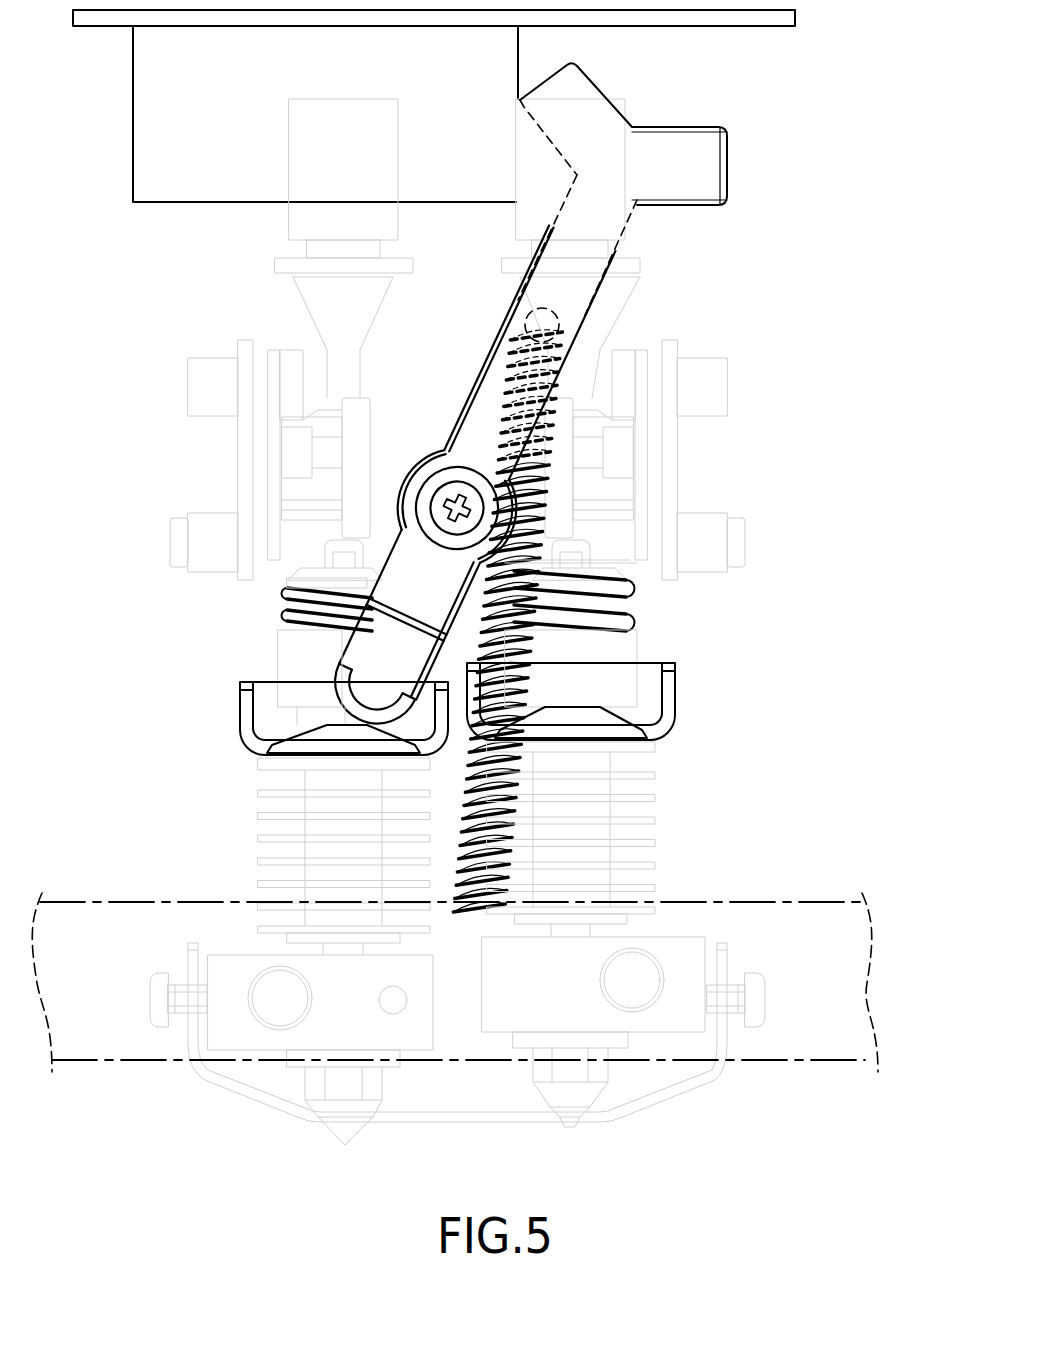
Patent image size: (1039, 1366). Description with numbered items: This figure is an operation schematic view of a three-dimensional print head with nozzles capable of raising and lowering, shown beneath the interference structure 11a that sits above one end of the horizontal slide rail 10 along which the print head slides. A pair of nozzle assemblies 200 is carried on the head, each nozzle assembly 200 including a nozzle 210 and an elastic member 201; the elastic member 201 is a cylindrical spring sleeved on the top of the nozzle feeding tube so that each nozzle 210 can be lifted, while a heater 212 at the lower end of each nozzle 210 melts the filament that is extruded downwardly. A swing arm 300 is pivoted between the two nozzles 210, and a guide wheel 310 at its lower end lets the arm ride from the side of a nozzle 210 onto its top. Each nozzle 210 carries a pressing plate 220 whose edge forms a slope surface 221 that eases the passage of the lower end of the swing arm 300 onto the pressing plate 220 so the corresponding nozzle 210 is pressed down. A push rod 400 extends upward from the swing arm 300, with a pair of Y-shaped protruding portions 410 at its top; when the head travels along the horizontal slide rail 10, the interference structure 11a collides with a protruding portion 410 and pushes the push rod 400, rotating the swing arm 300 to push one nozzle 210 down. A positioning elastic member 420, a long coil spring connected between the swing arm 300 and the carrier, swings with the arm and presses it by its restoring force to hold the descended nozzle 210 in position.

The horizontal slide rail 10 is at (73, 920).
The interference structure 11a is at (160, 148).
The nozzle assembly 200 is at (250, 863).
The elastic member 201 is at (287, 590).
The nozzle 210 is at (547, 1065).
The heater 212 is at (282, 998).
The pressing plate 220 is at (302, 752).
The slope surface 221 is at (302, 752).
The swing arm 300 is at (490, 420).
The guide wheel 310 is at (342, 680).
The push rod 400 is at (635, 216).
The protruding portion 410 is at (697, 147).
The positioning elastic member 420 is at (573, 477).